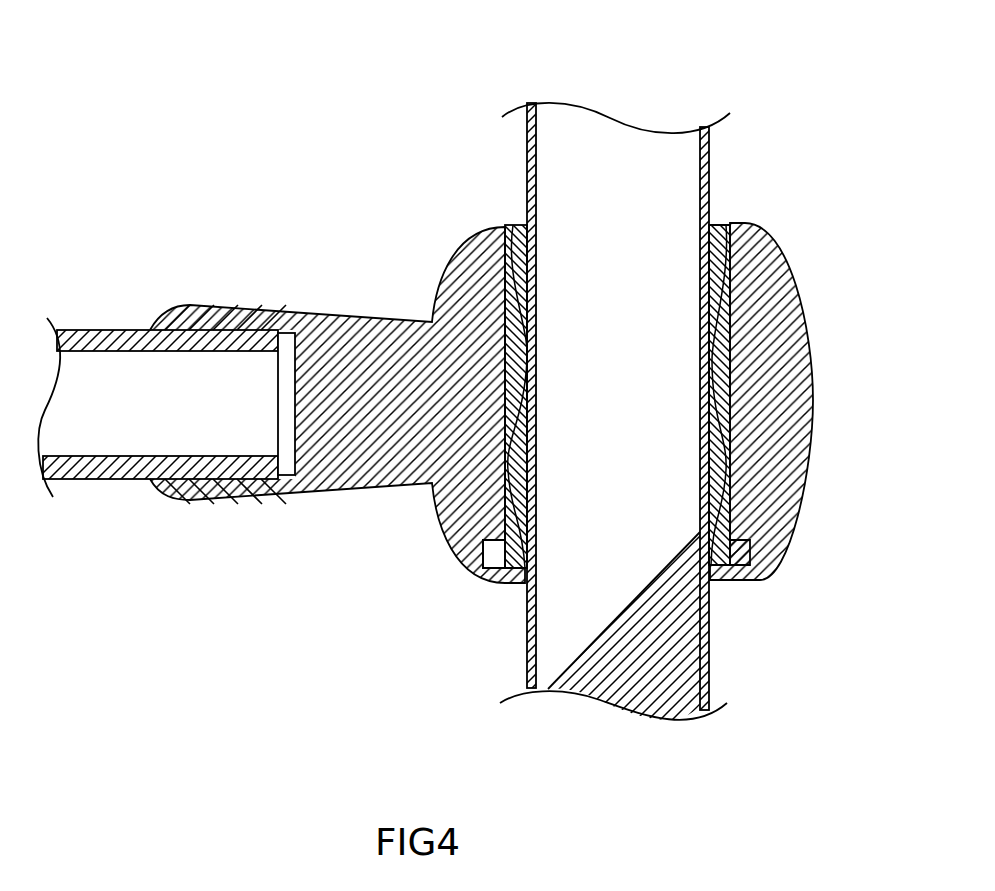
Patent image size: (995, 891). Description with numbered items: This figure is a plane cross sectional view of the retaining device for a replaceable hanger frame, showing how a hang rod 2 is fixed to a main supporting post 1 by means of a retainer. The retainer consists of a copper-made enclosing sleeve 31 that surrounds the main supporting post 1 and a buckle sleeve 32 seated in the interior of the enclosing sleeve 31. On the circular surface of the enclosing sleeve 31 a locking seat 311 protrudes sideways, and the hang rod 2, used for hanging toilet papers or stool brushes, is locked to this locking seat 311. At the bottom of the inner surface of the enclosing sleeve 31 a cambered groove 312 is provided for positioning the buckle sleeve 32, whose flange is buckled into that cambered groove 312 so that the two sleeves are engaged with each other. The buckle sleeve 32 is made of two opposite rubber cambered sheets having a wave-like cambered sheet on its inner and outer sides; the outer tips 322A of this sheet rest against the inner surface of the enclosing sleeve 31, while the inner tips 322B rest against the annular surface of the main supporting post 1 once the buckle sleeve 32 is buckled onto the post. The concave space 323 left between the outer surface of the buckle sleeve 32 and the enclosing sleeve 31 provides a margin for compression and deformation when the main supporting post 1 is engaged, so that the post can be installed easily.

The main supporting post 1 is at (635, 170).
The hang rod 2 is at (147, 383).
The enclosing sleeve 31 is at (462, 523).
The locking seat 311 is at (318, 328).
The cambered groove 312 is at (495, 568).
The buckle sleeve 32 is at (508, 230).
The outer tip 322A is at (505, 328).
The inner tip 322B is at (703, 390).
The concave space 323 is at (720, 228).